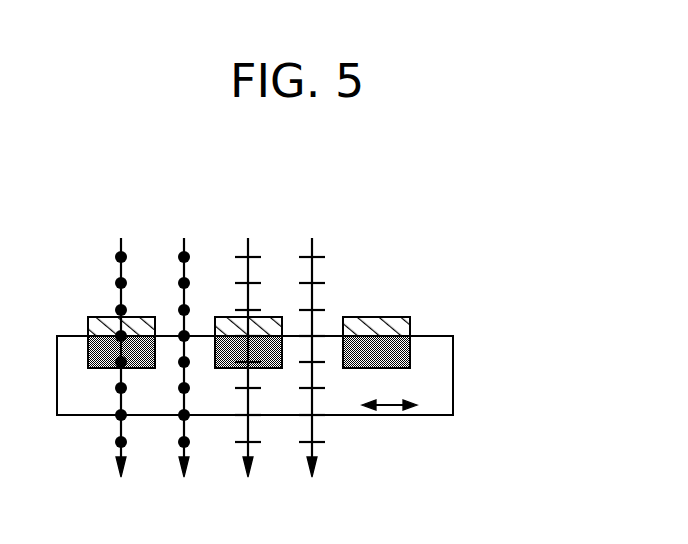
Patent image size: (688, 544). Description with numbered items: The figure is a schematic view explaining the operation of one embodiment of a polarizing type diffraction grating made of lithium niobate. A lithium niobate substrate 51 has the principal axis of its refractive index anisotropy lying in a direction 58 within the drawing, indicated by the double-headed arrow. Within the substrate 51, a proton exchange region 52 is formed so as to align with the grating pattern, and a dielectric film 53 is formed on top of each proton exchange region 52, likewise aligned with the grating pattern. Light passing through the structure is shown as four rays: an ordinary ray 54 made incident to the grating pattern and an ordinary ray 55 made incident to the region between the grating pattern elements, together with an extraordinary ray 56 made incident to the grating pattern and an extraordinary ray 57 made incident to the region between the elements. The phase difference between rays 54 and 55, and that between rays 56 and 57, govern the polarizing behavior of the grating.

The lithium niobate substrate 51 is at (442, 375).
The proton exchange region 52 is at (410, 353).
The dielectric film 53 is at (372, 317).
The ordinary ray 54 is at (121, 238).
The ordinary ray 55 is at (184, 238).
The extraordinary ray 56 is at (248, 238).
The extraordinary ray 57 is at (312, 238).
The direction of principal axis of refractive index anisotropy 58 is at (390, 405).